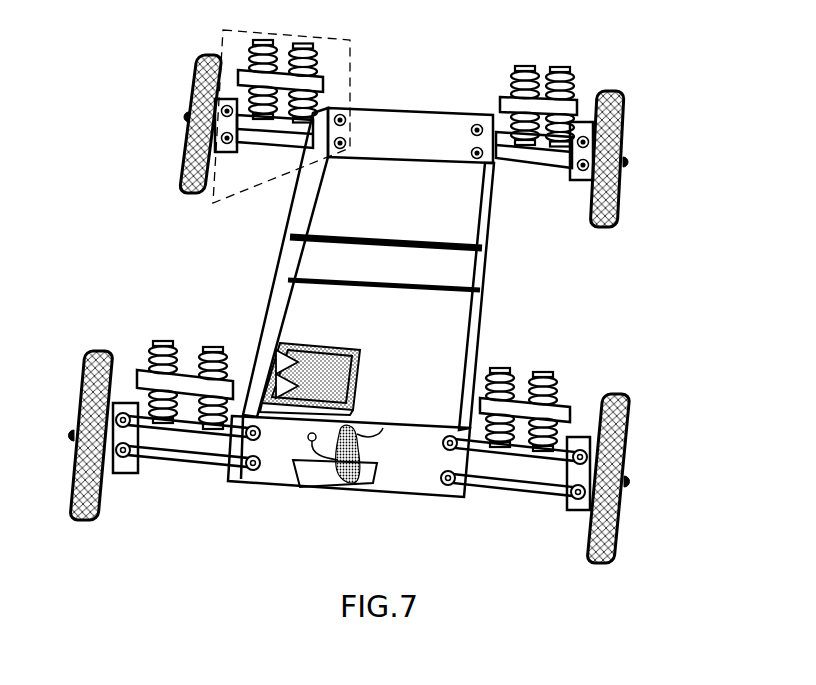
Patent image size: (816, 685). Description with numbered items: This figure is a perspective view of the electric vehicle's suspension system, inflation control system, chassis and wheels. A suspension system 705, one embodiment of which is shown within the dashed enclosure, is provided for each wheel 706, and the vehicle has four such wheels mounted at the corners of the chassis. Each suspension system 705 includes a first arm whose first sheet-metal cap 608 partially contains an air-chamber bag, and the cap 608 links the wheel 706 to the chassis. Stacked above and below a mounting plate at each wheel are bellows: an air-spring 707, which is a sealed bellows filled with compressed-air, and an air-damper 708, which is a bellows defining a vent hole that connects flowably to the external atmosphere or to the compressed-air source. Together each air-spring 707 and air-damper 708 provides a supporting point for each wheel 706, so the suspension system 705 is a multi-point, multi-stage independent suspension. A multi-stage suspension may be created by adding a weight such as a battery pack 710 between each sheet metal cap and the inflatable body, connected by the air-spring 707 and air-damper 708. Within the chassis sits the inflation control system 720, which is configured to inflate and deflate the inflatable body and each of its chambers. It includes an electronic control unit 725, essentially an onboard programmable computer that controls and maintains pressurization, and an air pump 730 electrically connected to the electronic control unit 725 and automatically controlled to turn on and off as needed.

The first sheet-metal cap 608 is at (547, 137).
The suspension system 705 is at (360, 42).
The wheel 706 is at (605, 122).
The air-spring 707 is at (568, 82).
The air-damper 708 is at (530, 67).
The battery pack 710 is at (550, 413).
The inflation control system 720 is at (360, 355).
The electronic control unit 725 is at (300, 358).
The air pump 730 is at (320, 490).